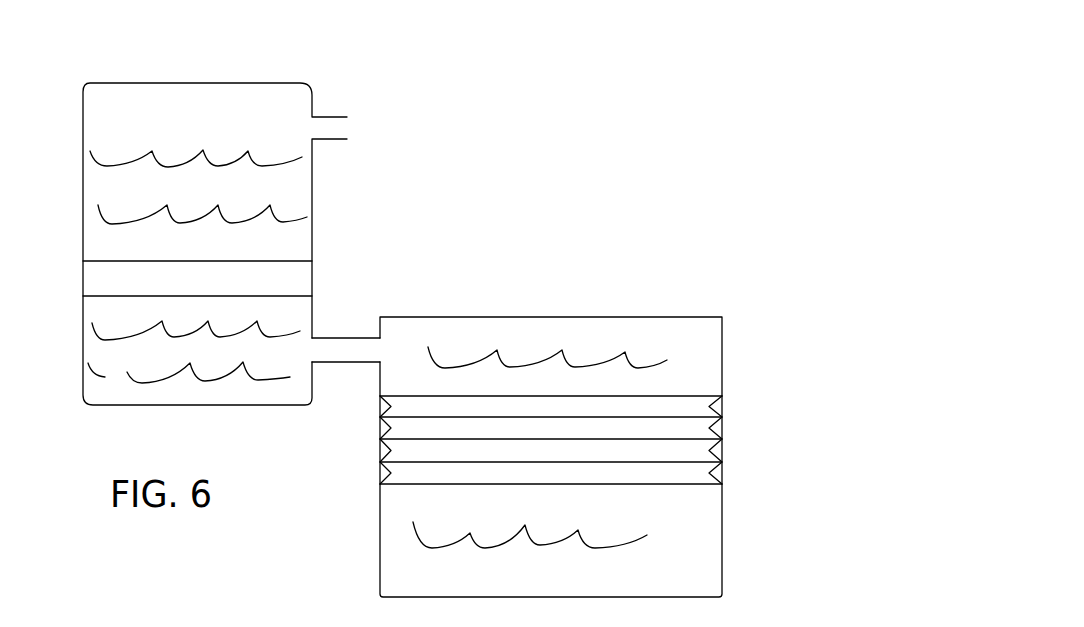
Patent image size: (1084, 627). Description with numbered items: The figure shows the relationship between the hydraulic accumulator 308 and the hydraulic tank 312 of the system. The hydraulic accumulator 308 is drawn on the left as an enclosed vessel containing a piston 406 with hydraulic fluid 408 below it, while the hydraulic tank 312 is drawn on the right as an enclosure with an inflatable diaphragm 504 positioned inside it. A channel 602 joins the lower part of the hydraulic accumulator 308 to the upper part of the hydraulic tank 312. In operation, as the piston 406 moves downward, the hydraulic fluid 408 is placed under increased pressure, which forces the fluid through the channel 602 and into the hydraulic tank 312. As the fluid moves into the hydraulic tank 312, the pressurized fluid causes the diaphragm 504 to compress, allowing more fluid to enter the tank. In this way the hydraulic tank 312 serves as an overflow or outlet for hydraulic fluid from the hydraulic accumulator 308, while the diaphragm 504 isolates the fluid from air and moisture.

The hydraulic accumulator 308 is at (277, 93).
The piston 406 is at (312, 272).
The hydraulic fluid 408 is at (117, 384).
The channel 602 is at (358, 337).
The hydraulic tank 312 is at (562, 317).
The inflatable diaphragm 504 is at (722, 438).